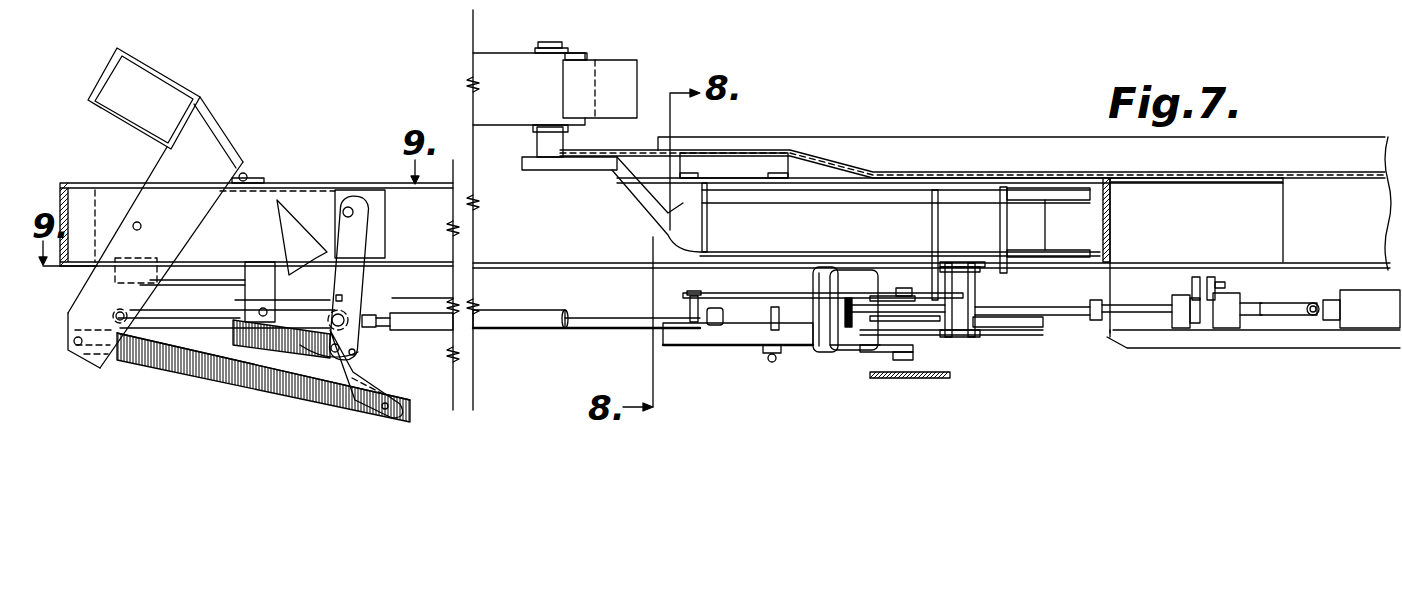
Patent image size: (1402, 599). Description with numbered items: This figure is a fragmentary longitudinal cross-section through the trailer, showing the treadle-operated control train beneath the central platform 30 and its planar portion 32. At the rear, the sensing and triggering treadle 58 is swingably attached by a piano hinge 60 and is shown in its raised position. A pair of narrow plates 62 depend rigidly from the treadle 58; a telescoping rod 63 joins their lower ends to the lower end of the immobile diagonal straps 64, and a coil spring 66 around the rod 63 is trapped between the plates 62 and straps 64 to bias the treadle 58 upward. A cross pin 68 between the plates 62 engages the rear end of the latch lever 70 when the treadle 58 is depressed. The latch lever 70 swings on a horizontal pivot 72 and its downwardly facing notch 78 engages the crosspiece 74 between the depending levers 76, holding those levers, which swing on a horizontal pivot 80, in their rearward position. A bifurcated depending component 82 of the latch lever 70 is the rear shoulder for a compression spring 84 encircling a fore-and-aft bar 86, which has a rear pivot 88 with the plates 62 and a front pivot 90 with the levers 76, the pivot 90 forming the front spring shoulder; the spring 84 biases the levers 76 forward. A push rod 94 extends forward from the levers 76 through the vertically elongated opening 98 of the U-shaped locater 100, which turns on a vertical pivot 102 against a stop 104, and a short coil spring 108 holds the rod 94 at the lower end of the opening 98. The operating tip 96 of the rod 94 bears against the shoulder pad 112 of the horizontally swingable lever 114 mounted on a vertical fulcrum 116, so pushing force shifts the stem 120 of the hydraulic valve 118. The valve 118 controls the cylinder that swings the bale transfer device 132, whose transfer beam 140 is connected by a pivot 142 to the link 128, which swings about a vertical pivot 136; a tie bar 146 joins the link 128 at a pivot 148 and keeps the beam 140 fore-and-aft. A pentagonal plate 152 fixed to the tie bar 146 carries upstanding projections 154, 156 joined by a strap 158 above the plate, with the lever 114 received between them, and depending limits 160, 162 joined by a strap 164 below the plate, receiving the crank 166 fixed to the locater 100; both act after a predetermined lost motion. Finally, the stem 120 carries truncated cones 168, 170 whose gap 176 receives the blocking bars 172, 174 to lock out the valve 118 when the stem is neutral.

The central platform 30 is at (1318, 150).
The planar portion 32 is at (996, 170).
The sensing and triggering treadle 58 is at (150, 52).
The piano hinge 60 is at (250, 174).
The depending plates 62 is at (78, 324).
The telescoping rod 63 is at (167, 372).
The diagonally extending straps 64 is at (395, 383).
The coil spring 66 is at (255, 398).
The cross pin 68 is at (140, 222).
The latch lever 70 is at (180, 268).
The horizontal pivot 72 is at (263, 308).
The crosspiece 74 is at (366, 304).
The depending levers 76 is at (370, 235).
The notch 78 is at (330, 255).
The horizontal pivot 80 is at (350, 207).
The bifurcated depending component 82 is at (235, 308).
The compression spring 84 is at (300, 396).
The fore-and-aft extending bar 86 is at (143, 315).
The rear pivot 88 is at (118, 310).
The front pivot 90 is at (352, 354).
The push rod 94 is at (520, 312).
The operating tip 96 is at (842, 305).
The vertically elongated opening 98 is at (815, 295).
The locater 100 is at (838, 258).
The vertical pivot 102 is at (972, 262).
The stop 104 is at (957, 272).
The short coil spring 108 is at (775, 333).
The shoulder pad 112 is at (838, 342).
The horizontally swingable lever 114 is at (875, 300).
The vertical fulcrum 116 is at (882, 300).
The hydraulic valve 118 is at (1348, 318).
The valve stem 120 is at (1072, 315).
The link 128 is at (838, 198).
The bale transfer device 132 is at (600, 50).
The vertical pivot 136 is at (1075, 212).
The transfer beam 140 is at (492, 60).
The pivot 142 is at (540, 145).
The tie bar 146 is at (1013, 322).
The pivot 148 is at (990, 302).
The pentagonal plate 152 is at (672, 337).
The upstanding projection 154 is at (700, 310).
The upstanding projection 156 is at (900, 290).
The strap 158 is at (707, 300).
The depending limit 160 is at (780, 352).
The depending limit 162 is at (930, 362).
The strap 164 is at (868, 352).
The crank 166 is at (882, 362).
The truncated cone 168 is at (1232, 330).
The truncated cone 170 is at (1175, 330).
The blocking bar 172 is at (1200, 288).
The blocking bar 174 is at (1228, 284).
The gap 176 is at (1205, 325).